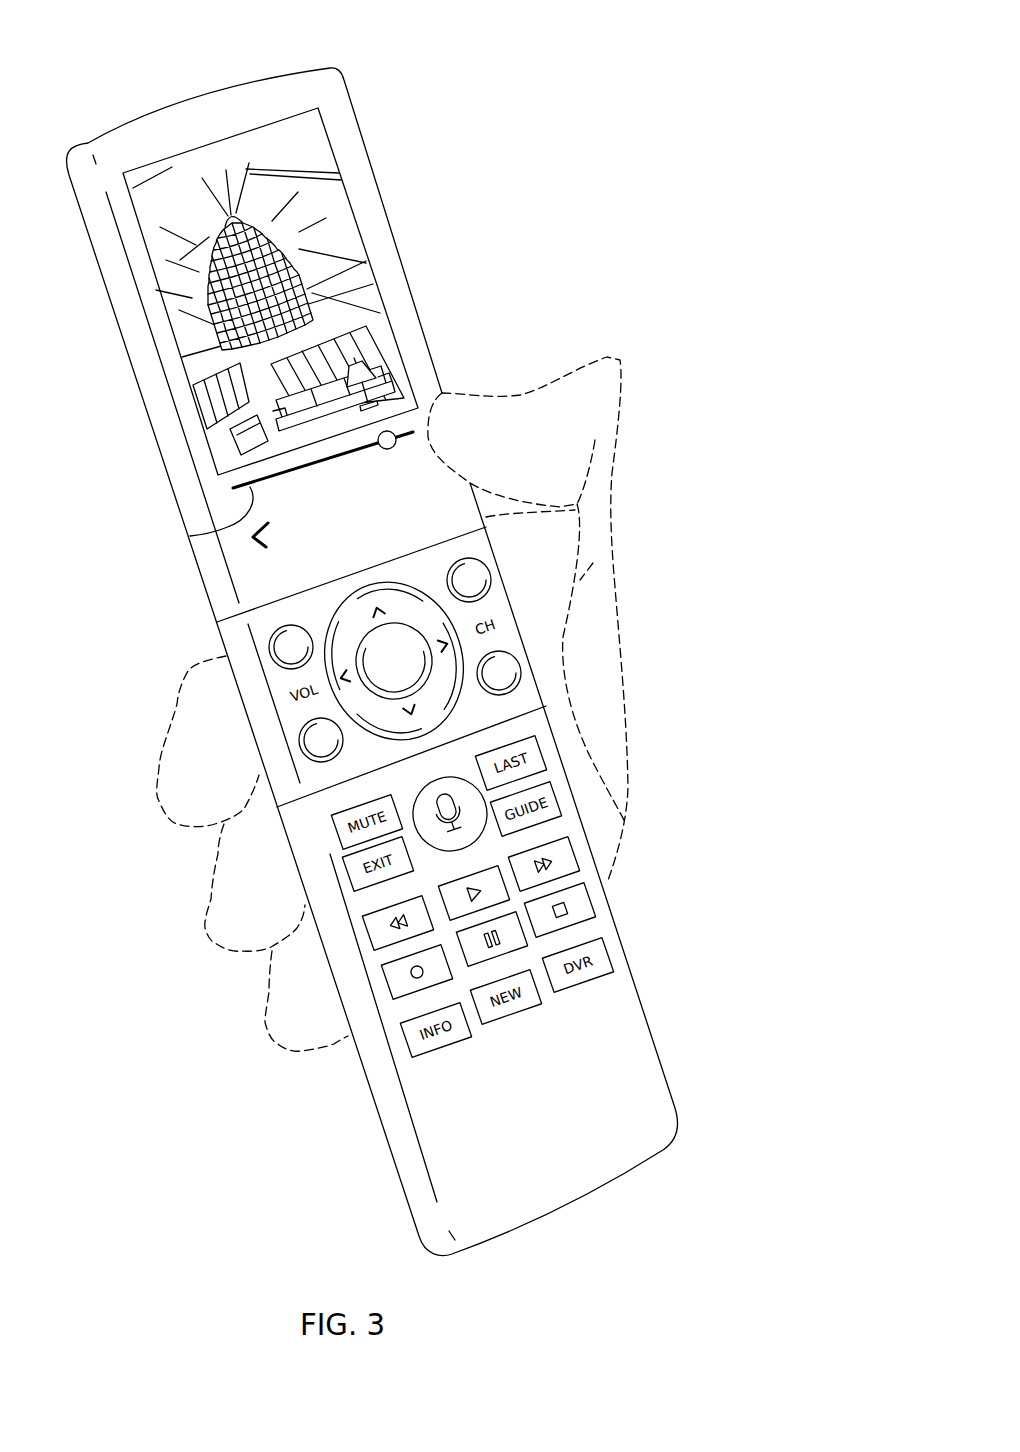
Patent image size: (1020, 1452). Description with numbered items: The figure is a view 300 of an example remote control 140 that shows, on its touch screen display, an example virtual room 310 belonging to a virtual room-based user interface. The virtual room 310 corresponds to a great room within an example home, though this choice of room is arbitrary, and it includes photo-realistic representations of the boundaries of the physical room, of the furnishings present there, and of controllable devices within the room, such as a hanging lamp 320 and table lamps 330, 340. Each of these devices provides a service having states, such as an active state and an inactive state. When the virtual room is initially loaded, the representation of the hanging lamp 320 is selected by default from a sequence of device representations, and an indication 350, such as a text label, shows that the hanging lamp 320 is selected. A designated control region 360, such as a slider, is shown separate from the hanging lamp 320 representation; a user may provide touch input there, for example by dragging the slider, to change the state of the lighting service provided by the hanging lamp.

The view 300 is at (542, 61).
The remote control 140 is at (212, 602).
The virtual room 310 is at (347, 188).
The hanging lamp 320 is at (307, 260).
The table lamp 330 is at (388, 403).
The table lamp 340 is at (377, 363).
The indication 350 is at (290, 143).
The designated control region 360 is at (200, 530).